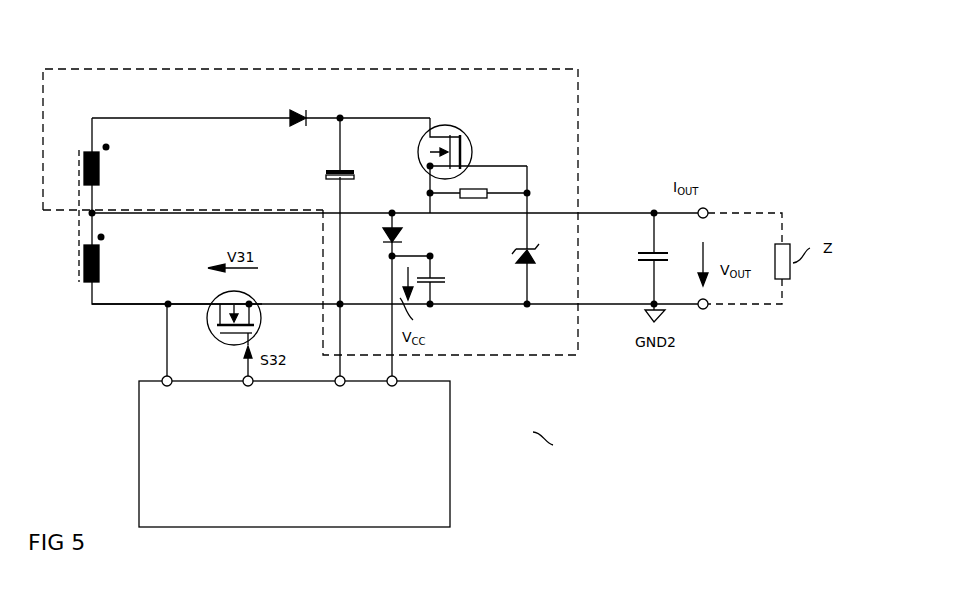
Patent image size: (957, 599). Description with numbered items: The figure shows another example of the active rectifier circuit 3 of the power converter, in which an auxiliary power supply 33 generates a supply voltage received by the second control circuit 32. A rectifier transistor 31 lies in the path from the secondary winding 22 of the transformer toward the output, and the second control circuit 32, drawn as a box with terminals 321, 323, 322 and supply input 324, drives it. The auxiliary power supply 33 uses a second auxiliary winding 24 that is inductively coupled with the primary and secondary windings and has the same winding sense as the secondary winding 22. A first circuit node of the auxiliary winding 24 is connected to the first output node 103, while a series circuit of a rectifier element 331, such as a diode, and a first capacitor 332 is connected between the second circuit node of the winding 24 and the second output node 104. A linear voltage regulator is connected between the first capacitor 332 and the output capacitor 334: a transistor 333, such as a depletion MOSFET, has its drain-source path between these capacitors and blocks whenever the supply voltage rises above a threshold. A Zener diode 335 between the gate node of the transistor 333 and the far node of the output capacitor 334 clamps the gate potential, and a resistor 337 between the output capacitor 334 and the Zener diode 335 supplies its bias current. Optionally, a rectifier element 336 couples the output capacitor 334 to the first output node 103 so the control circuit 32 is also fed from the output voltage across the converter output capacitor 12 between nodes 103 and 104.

The active rectifier circuit 3 is at (332, 58).
The auxiliary power supply 33 is at (583, 116).
The rectifier element 331 is at (317, 110).
The first capacitor 332 is at (362, 177).
The transistor 333 is at (472, 138).
The output capacitor 334 is at (448, 280).
The Zener diode 335 is at (513, 253).
The rectifier element 336 is at (383, 248).
The resistor 337 is at (512, 188).
The second auxiliary winding 24 is at (99, 175).
The secondary winding 22 is at (100, 268).
The rectifier transistor 31 is at (217, 297).
The second control circuit 32 is at (450, 453).
The control circuit terminal 321 is at (168, 387).
The control circuit terminal 322 is at (341, 387).
The control circuit terminal 323 is at (249, 387).
The supply input 324 is at (393, 387).
The output capacitor 12 is at (635, 258).
The first output node 103 is at (708, 210).
The second output node 104 is at (707, 307).